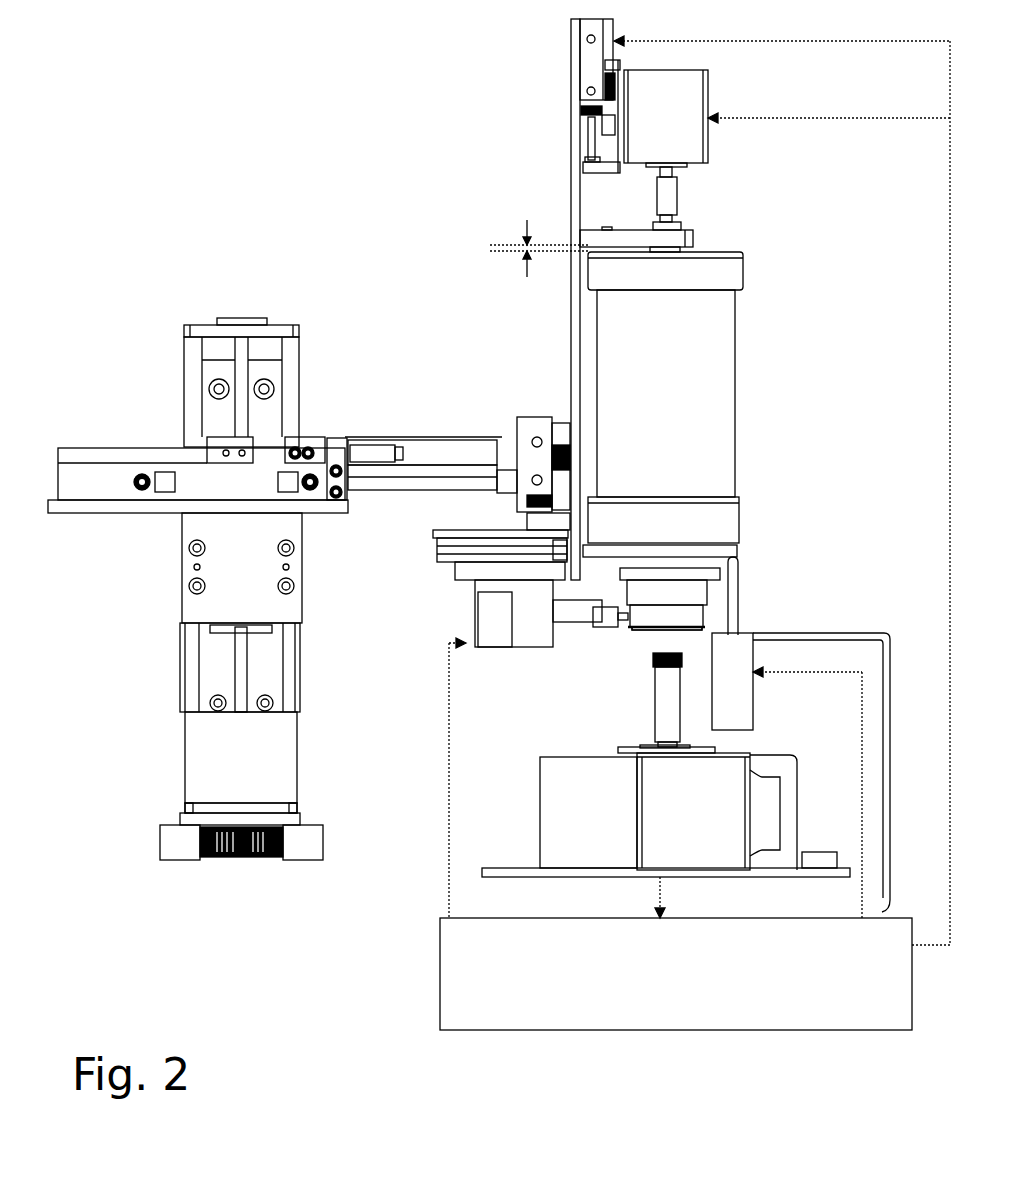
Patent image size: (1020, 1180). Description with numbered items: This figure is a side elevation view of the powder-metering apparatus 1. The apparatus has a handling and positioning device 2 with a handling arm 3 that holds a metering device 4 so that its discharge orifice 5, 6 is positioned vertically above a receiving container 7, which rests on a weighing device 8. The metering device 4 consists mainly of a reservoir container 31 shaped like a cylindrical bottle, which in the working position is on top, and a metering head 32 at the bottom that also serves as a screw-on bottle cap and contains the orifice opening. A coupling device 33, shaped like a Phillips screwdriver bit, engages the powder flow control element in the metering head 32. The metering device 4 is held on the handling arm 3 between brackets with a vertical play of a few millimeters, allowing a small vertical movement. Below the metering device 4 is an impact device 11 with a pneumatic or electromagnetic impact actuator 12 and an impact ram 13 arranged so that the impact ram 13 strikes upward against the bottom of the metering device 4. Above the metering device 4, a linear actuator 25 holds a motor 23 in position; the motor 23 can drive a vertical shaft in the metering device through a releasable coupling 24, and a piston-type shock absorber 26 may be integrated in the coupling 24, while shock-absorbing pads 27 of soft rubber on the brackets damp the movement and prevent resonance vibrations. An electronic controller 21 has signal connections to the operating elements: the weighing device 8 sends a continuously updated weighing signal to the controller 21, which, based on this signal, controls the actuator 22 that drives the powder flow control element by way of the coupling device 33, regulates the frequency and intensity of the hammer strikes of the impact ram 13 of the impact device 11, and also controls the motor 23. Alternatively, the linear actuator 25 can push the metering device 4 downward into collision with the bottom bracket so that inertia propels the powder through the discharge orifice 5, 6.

The powder-metering apparatus 1 is at (261, 111).
The handling and positioning device 2 is at (247, 875).
The handling arm 3 is at (437, 445).
The metering device 4 is at (780, 342).
The discharge orifice 5 is at (590, 690).
The discharge orifice 6 is at (590, 690).
The receiving container 7 is at (662, 700).
The weighing device 8 is at (595, 817).
The impact device 11 is at (752, 618).
The impact actuator 12 is at (740, 695).
The impact ram 13 is at (732, 580).
The electronic controller 21 is at (679, 982).
The actuator 22 is at (528, 628).
The motor 23 is at (677, 87).
The releasable coupling 24 is at (681, 222).
The linear actuator 25 is at (575, 299).
The piston-type shock absorber 26 is at (664, 195).
The shock-absorbing pads 27 is at (582, 246).
The reservoir container 31 is at (683, 391).
The metering head 32 is at (602, 645).
The coupling device 33 is at (556, 652).